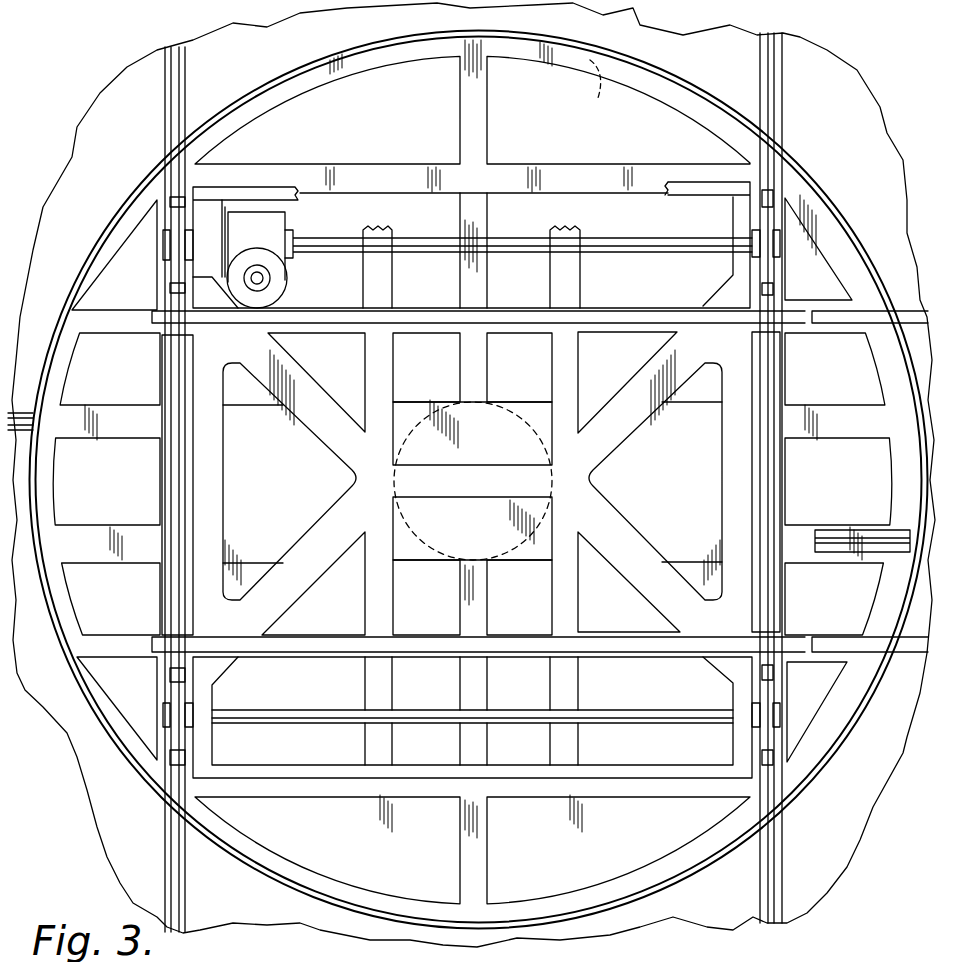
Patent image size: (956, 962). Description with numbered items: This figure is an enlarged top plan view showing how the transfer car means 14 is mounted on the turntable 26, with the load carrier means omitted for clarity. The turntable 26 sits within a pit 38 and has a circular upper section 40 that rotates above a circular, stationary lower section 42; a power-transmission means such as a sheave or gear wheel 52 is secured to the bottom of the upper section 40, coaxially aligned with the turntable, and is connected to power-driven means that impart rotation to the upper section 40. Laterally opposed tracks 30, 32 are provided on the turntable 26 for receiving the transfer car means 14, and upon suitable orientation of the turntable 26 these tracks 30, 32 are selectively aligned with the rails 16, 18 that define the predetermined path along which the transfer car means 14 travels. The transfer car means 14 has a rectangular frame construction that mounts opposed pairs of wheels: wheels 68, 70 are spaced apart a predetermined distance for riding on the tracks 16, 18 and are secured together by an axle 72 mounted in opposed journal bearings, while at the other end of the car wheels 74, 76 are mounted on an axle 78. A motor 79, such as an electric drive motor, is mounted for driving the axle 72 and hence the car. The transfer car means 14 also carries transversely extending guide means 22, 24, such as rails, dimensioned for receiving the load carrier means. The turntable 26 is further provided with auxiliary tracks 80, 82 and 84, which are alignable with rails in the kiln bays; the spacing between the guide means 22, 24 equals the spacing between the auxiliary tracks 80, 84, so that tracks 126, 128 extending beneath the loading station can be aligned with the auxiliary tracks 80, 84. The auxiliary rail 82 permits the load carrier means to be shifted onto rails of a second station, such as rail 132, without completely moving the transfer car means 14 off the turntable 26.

The transfer car means 14 is at (488, 493).
The rail 16 is at (770, 52).
The rail 18 is at (182, 75).
The guide means 22 is at (617, 320).
The guide means 24 is at (637, 645).
The turntable 26 is at (361, 24).
The track 30 is at (773, 182).
The track 32 is at (177, 463).
The pit 38 is at (386, 134).
The circular upper section 40 is at (604, 60).
The circular stationary lower section 42 is at (583, 90).
The sheave or gear wheel 52 is at (538, 434).
The wheel 68 is at (773, 260).
The wheel 70 is at (175, 267).
The axle 72 is at (617, 242).
The wheel 74 is at (772, 696).
The wheel 76 is at (172, 700).
The axle 78 is at (315, 714).
The motor 79 is at (272, 226).
The auxiliary track 80 is at (845, 318).
The auxiliary track 82 is at (838, 541).
The auxiliary track 84 is at (838, 640).
The track 126 is at (870, 318).
The track 128 is at (907, 650).
The rail 132 is at (25, 420).